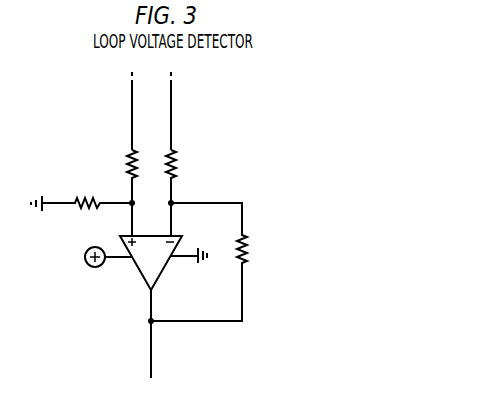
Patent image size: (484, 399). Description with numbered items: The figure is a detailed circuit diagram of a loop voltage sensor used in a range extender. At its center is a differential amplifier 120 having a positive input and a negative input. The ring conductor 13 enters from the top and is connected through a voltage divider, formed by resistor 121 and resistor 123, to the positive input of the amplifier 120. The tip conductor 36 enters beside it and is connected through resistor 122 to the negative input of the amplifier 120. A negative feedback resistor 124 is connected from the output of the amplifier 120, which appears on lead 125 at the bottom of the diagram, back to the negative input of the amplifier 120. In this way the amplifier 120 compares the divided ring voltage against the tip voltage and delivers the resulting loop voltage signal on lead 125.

The ring conductor 13 is at (131, 117).
The tip conductor 36 is at (171, 118).
The differential amplifier 120 is at (142, 275).
The resistor of voltage divider 121 is at (121, 176).
The resistor 122 is at (187, 176).
The resistor of voltage divider 123 is at (81, 192).
The negative feedback resistor 124 is at (212, 262).
The output lead 125 is at (150, 352).